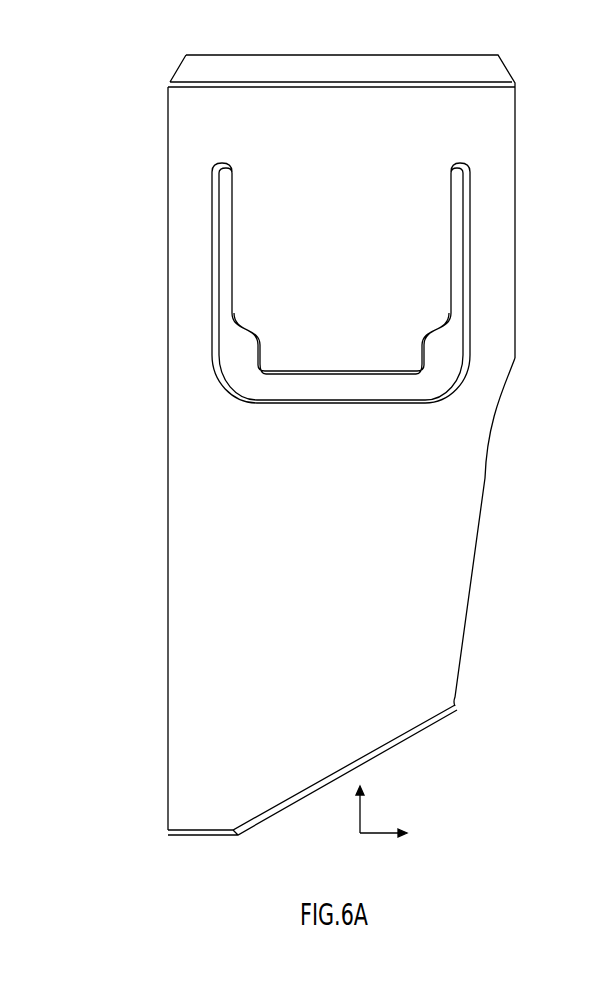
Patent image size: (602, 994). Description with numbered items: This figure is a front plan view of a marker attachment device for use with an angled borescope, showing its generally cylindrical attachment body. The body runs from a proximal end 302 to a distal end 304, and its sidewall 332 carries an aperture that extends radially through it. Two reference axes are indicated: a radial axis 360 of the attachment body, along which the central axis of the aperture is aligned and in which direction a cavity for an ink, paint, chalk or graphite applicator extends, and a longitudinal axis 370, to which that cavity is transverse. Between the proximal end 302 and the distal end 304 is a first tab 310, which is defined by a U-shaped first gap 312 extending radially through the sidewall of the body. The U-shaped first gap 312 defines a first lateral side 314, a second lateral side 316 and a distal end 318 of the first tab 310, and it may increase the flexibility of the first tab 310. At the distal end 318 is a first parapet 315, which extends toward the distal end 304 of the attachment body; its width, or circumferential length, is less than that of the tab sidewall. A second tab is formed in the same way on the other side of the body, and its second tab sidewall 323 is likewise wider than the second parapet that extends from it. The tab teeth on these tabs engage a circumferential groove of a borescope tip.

The proximal end 302 is at (243, 55).
The distal end 304 is at (193, 837).
The first tab 310 is at (335, 295).
The U-shaped first gap 312 is at (430, 380).
The first lateral side 314 is at (447, 203).
The second lateral side 316 is at (232, 193).
The first parapet 315 is at (277, 348).
The distal end of the first tab 318 is at (282, 365).
The second tab sidewall 323 is at (260, 305).
The sidewall 332 is at (515, 358).
The radial axis 360 is at (370, 833).
The longitudinal axis 370 is at (360, 817).